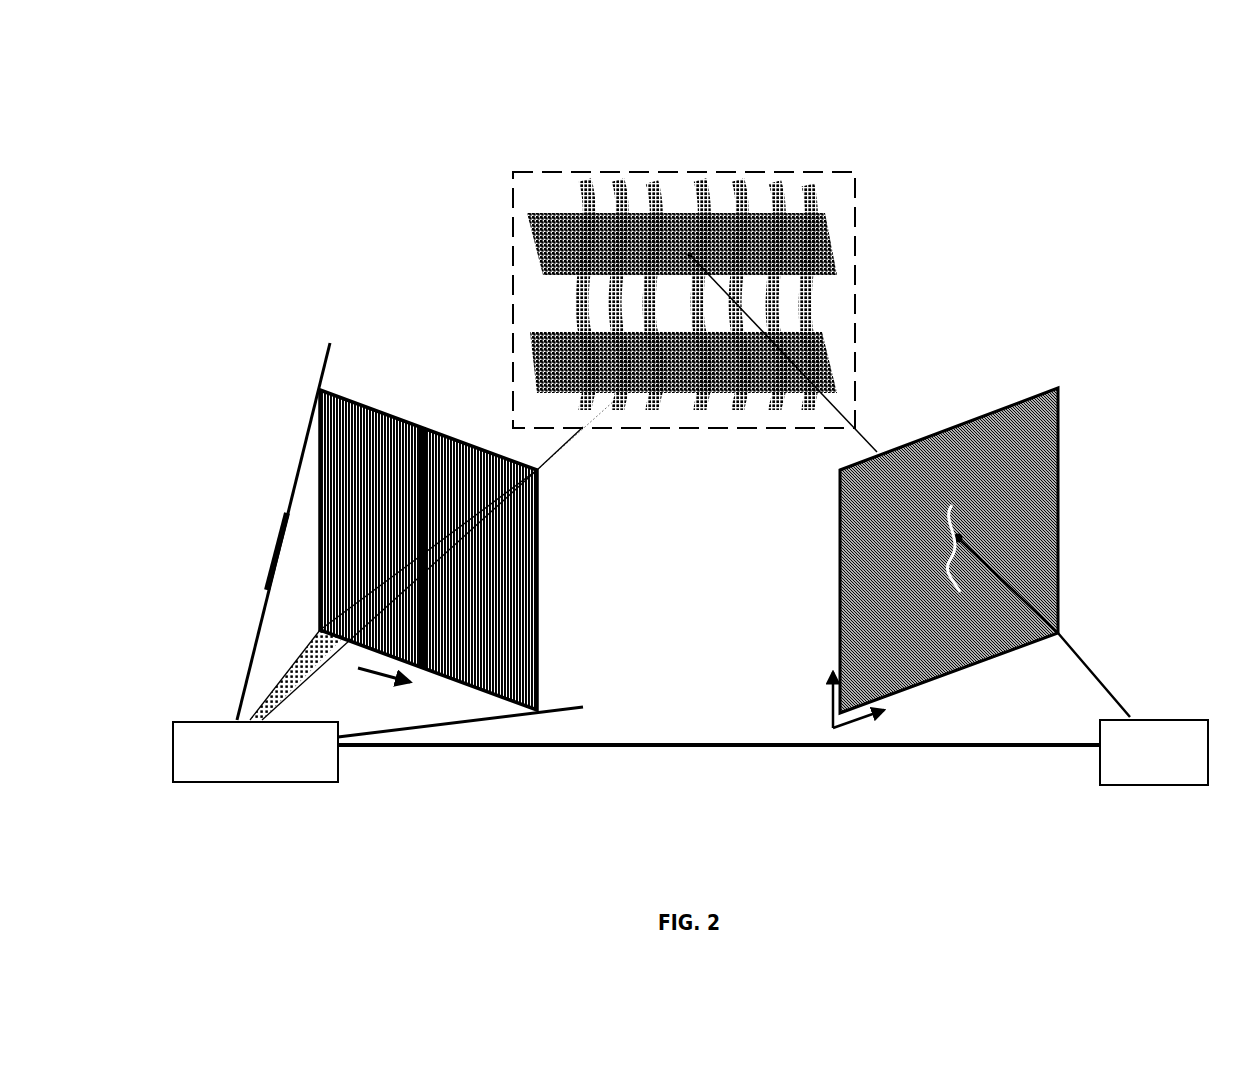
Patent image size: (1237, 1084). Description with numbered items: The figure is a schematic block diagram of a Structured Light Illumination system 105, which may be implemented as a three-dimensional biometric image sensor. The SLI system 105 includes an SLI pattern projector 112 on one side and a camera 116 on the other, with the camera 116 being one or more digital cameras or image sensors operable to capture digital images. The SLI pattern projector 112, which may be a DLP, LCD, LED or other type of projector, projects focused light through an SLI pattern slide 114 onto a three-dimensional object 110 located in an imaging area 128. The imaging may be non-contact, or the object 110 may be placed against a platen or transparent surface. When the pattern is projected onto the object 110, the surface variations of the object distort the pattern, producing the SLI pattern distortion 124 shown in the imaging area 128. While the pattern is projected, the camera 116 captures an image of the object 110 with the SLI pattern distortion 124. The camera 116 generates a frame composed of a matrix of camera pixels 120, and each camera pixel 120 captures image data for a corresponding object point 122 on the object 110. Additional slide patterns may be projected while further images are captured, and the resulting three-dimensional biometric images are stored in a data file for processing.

The SLI system 105 is at (719, 761).
The 3D object 110 is at (544, 208).
The SLI pattern projector 112 is at (355, 562).
The SLI pattern slide 114 is at (416, 413).
The camera 116 is at (1083, 661).
The camera pixel 120 is at (985, 524).
The object point 122 is at (698, 251).
The SLI pattern distortion 124 is at (676, 213).
The imaging area 128 is at (684, 302).